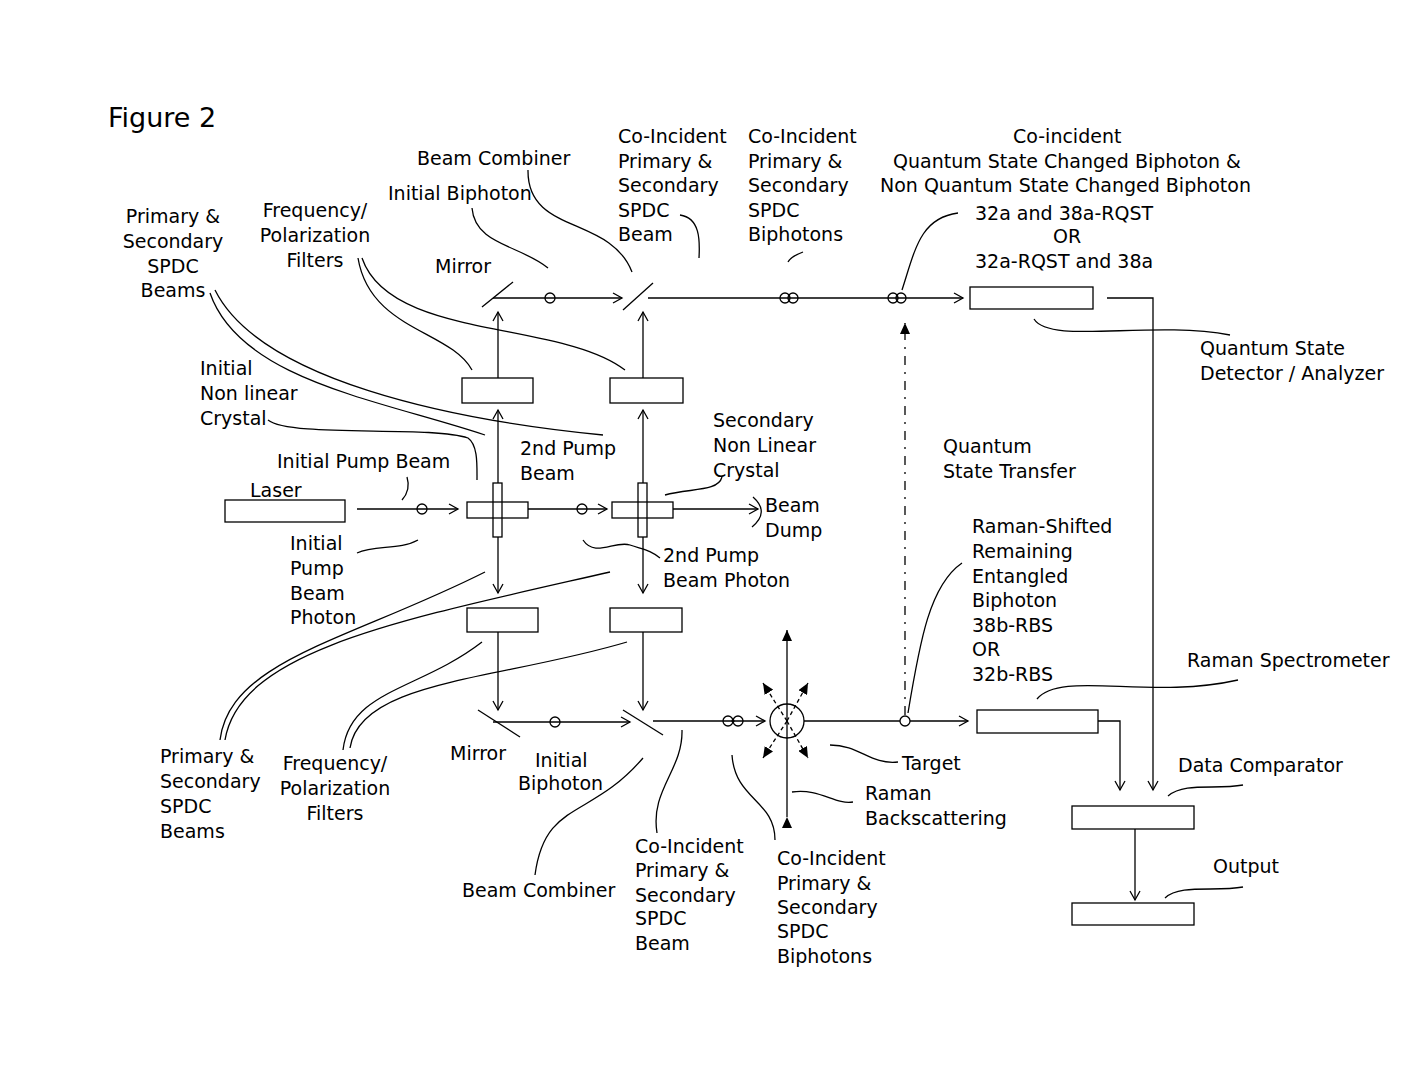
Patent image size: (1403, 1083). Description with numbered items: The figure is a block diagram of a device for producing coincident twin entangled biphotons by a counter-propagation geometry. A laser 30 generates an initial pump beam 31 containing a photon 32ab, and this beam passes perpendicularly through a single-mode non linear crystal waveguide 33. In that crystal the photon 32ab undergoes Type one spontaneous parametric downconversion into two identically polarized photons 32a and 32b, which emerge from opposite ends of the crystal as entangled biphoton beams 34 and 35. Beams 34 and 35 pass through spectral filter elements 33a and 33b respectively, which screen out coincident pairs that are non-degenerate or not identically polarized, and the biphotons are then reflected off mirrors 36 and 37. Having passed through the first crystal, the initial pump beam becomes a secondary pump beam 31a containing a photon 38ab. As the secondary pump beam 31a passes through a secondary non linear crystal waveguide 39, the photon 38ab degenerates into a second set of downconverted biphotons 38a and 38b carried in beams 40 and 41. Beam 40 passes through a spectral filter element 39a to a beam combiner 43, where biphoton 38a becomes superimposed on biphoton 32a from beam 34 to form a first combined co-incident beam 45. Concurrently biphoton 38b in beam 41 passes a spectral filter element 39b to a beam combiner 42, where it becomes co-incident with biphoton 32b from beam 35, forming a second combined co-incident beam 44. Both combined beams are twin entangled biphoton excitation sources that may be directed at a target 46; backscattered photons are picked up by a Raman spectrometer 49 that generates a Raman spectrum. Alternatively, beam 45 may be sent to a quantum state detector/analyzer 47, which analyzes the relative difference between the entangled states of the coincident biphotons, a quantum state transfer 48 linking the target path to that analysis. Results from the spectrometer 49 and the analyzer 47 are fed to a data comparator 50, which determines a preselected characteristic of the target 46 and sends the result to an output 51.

The laser 30 is at (285, 511).
The initial pump beam 31 is at (407, 496).
The secondary pump beam 31a is at (567, 496).
The photon 32ab is at (422, 520).
The photon 32a is at (674, 288).
The photon 32b is at (653, 733).
The single-mode non linear crystal waveguide 33 is at (497, 508).
The spectral filter element 33a is at (497, 357).
The spectral filter element 33b is at (502, 659).
The entangled biphoton beam 34 is at (487, 446).
The entangled biphoton beam 35 is at (485, 565).
The mirror 36 is at (547, 291).
The mirror 37 is at (551, 726).
The SPDC biphoton 38a is at (840, 307).
The photon 38ab is at (586, 520).
The SPDC biphoton 38b is at (728, 708).
The secondary non linear crystal waveguide 39 is at (685, 508).
The spectral filter element 39a is at (646, 357).
The spectral filter element 39b is at (646, 659).
The entangled biphoton beam 40 is at (630, 446).
The entangled biphoton beam 41 is at (634, 565).
The beam combiner 42 is at (643, 731).
The beam combiner 43 is at (638, 292).
The combined co-incident beam 2 44 is at (709, 710).
The combined co-incident beam 1 45 is at (805, 286).
The target 46 is at (865, 723).
The quantum state detector/analyzer 47 is at (1061, 538).
The quantum state transfer 48 is at (918, 519).
The Raman spectrometer 49 is at (1048, 750).
The data comparator 50 is at (1133, 853).
The output 51 is at (1133, 913).